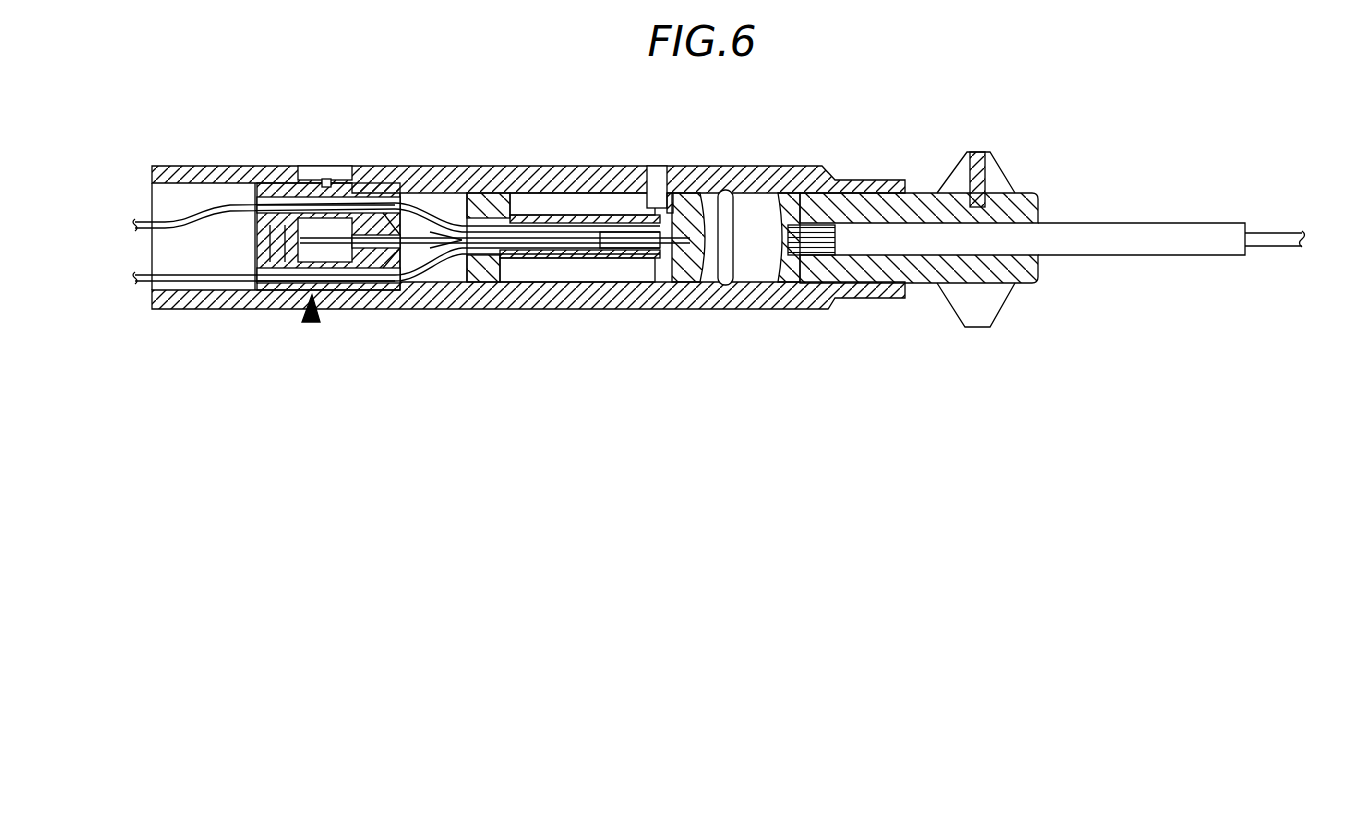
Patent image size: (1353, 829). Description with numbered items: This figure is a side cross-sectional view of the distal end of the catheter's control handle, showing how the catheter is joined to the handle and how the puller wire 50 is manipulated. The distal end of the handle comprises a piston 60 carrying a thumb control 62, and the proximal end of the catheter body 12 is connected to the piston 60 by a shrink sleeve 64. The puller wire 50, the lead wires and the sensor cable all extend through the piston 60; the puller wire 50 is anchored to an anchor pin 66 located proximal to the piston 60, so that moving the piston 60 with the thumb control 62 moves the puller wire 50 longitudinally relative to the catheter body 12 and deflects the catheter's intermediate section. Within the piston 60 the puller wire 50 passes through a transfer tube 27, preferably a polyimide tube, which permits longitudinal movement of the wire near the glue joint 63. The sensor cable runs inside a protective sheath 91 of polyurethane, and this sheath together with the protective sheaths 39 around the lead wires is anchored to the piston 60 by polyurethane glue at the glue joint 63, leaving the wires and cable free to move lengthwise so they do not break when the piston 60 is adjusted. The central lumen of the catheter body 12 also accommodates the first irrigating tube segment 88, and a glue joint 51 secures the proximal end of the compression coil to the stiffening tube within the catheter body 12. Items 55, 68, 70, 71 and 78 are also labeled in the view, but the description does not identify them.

The catheter body 12 is at (1273, 238).
The transfer tube 27 is at (633, 253).
The protective sheath 39 is at (410, 215).
The puller wire 50 is at (452, 228).
The glue joint 51 is at (805, 250).
The insertion direction arrow 55 is at (310, 322).
The piston 60 is at (927, 207).
The thumb control 62 is at (993, 170).
The glue joint 63 is at (580, 222).
The shrink sleeve 64 is at (1157, 238).
The anchor pin 66 is at (327, 207).
The insert body 68 is at (293, 297).
The electrical conductor 70 is at (285, 210).
The contact 71 is at (277, 237).
The guide surface 78 is at (410, 277).
The first irrigating tube segment 88 is at (810, 243).
The protective sheath 91 is at (443, 258).